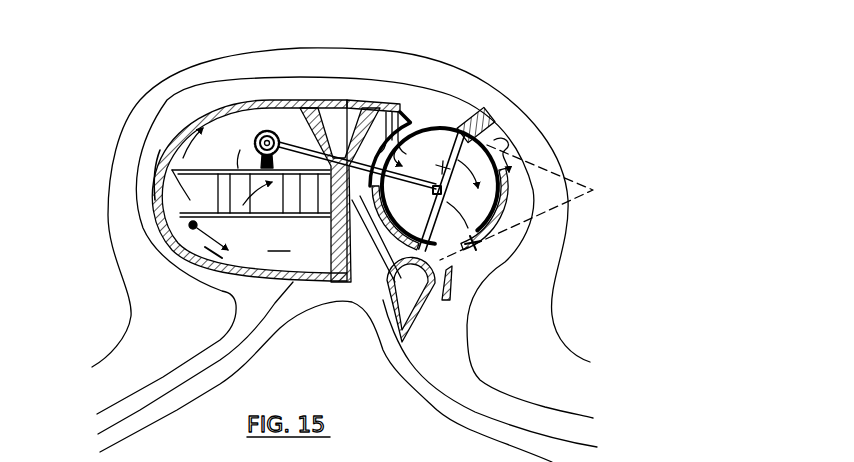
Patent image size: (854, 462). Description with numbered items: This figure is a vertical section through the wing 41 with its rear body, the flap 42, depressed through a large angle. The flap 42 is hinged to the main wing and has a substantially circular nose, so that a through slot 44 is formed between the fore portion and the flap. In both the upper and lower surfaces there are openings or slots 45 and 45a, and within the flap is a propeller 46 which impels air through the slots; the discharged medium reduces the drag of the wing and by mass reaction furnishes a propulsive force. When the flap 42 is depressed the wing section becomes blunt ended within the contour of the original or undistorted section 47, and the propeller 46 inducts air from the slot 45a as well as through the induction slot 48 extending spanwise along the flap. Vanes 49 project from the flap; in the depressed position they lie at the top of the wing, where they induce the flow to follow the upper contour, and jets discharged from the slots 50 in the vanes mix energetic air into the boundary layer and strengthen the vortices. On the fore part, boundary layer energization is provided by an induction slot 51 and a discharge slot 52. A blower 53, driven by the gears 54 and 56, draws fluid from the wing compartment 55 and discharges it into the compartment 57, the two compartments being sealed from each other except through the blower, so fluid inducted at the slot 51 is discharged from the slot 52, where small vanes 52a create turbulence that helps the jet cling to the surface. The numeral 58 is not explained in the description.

The wing 41 is at (157, 183).
The flap 42 is at (458, 322).
The through slot 44 is at (410, 90).
The openings or slots 45 is at (430, 310).
The openings or slots 45a is at (385, 297).
The propeller 46 is at (428, 203).
The original or undistorted section 47 is at (562, 168).
The induction slot 48 is at (392, 112).
The vanes 49 is at (493, 126).
The slots 50 is at (474, 113).
The induction slot 51 is at (283, 141).
The discharge slot 52 is at (179, 165).
The small vanes 52a is at (168, 158).
The blower 53 is at (188, 230).
The gear 54 is at (243, 146).
The wing compartment 55 is at (220, 156).
The gear 56 is at (267, 130).
The compartment 57 is at (187, 197).
The partition wall 58 is at (300, 117).